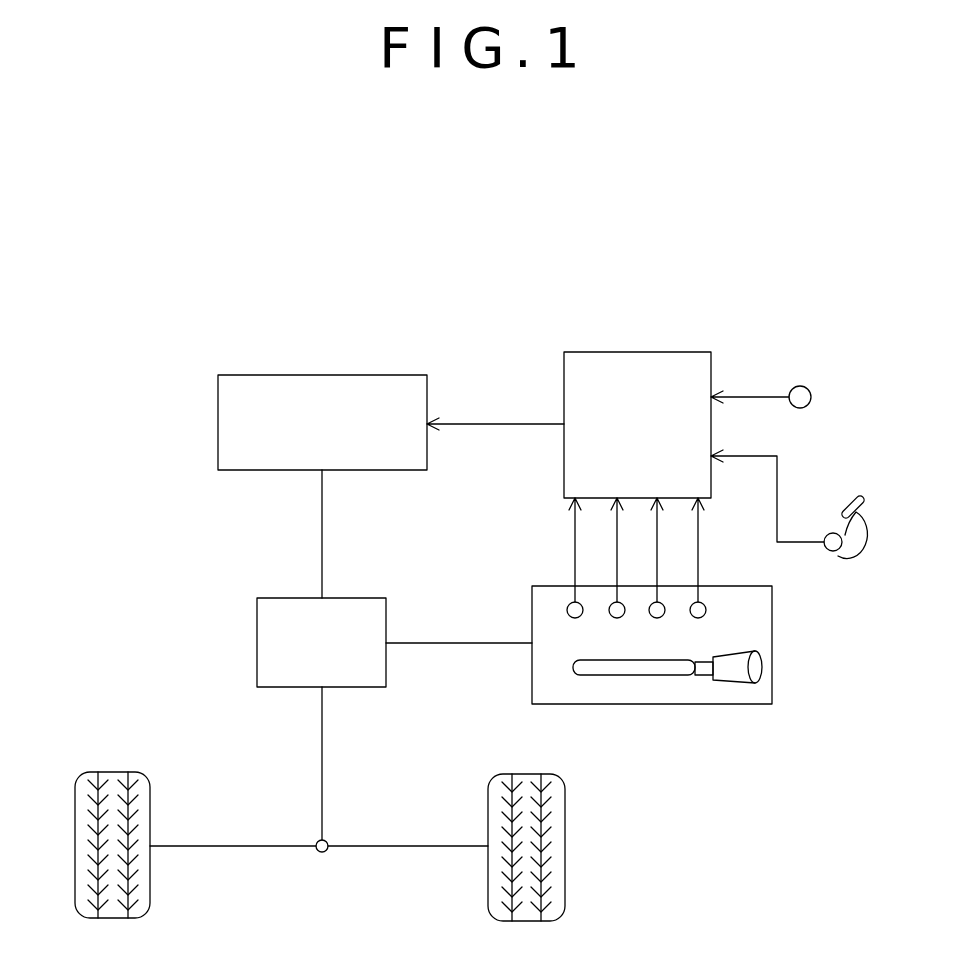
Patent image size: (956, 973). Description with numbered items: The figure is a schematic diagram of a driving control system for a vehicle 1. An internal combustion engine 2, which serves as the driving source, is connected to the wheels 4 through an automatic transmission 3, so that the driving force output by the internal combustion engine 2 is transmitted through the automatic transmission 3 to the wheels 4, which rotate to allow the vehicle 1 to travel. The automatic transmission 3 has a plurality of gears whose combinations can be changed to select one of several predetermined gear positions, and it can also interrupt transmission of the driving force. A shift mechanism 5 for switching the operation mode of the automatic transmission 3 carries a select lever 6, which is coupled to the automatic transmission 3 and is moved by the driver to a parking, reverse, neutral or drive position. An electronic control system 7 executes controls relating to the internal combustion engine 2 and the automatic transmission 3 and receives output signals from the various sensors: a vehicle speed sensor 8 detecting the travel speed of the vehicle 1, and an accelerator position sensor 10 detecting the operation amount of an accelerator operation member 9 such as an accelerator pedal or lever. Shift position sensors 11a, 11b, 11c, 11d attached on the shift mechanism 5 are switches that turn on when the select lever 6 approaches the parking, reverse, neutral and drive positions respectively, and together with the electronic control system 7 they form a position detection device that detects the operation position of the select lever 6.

The vehicle 1 is at (165, 290).
The internal combustion engine 2 is at (388, 375).
The automatic transmission 3 is at (281, 598).
The wheels 4 is at (75, 798).
The shift mechanism 5 is at (667, 646).
The select lever 6 is at (733, 684).
The electronic control system 7 is at (592, 352).
The vehicle speed sensor 8 is at (805, 387).
The accelerator operation member 9 is at (868, 502).
The accelerator position sensor 10 is at (828, 533).
The shift position sensor 11a is at (704, 604).
The shift position sensor 11b is at (664, 604).
The shift position sensor 11c is at (612, 604).
The shift position sensor 11d is at (568, 604).